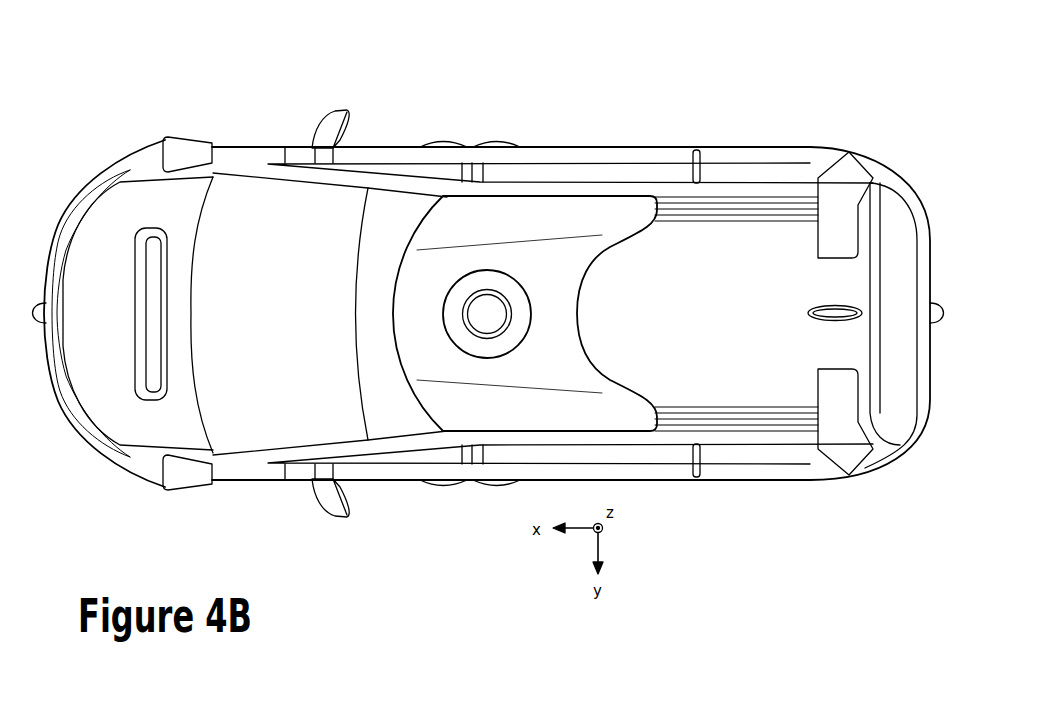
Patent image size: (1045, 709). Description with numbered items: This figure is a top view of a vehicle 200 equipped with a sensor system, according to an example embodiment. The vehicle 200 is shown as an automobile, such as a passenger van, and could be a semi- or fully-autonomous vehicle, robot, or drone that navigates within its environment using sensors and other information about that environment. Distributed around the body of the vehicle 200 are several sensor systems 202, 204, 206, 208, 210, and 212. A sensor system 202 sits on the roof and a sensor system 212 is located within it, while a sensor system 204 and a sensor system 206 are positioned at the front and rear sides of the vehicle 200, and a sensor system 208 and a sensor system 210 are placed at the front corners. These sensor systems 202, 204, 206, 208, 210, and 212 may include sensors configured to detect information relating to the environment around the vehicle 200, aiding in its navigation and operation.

The vehicle 200 is at (836, 71).
The sensor system 202 is at (498, 272).
The sensor system 204 is at (46, 300).
The sensor system 206 is at (936, 300).
The sensor system 208 is at (170, 136).
The sensor system 210 is at (174, 494).
The sensor system 212 is at (442, 311).